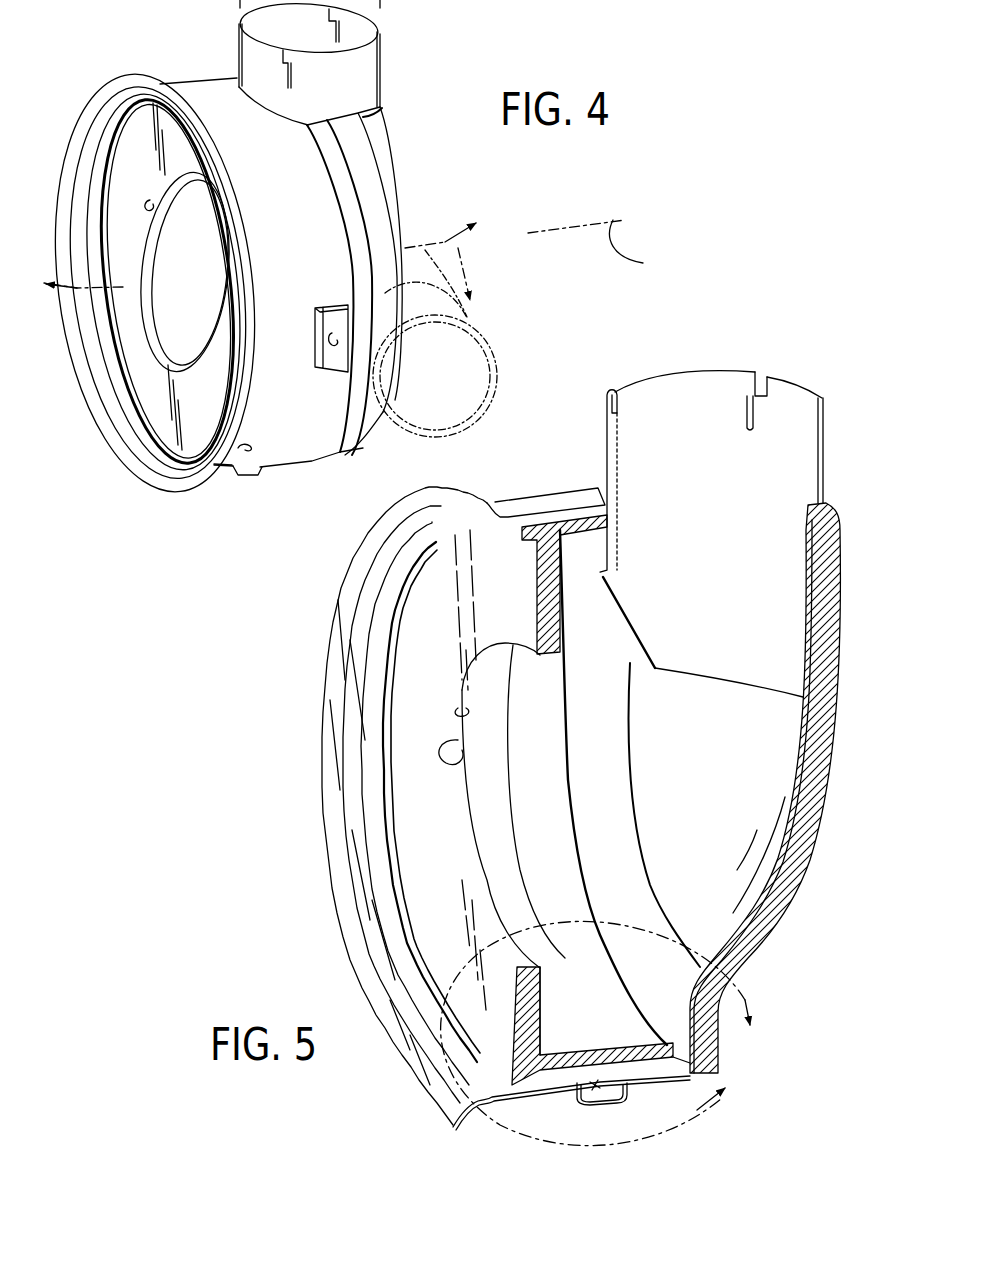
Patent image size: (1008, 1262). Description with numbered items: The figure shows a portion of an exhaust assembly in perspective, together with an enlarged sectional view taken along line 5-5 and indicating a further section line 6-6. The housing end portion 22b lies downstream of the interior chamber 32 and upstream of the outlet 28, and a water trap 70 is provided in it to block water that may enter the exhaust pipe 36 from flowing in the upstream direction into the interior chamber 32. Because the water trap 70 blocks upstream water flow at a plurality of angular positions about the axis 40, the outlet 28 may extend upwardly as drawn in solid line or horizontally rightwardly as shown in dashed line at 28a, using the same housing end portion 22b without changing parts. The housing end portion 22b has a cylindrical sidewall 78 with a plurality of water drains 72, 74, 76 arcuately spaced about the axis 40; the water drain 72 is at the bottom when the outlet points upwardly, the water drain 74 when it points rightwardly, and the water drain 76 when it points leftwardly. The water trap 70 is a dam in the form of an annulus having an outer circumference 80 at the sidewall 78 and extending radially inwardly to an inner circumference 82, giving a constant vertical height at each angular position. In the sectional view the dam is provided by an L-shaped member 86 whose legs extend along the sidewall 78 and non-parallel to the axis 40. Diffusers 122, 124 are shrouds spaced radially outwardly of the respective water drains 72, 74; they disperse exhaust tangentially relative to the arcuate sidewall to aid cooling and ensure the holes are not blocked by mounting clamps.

In FIG. 4, the section line 5- 5 is at (332, 271).
In FIG. 5, the section line 6- 6 is at (608, 1033).
In FIG. 4, the housing end portion 22b is at (207, 82).
In FIG. 5, the housing end portion 22b is at (568, 500).
In FIG. 4, the outlet 28 is at (362, 82).
In FIG. 5, the outlet 28 is at (823, 430).
In FIG. 4, the outlet in alternate orientation 28a is at (476, 322).
In FIG. 4, the interior chamber 32 is at (132, 413).
In FIG. 4, the exhaust pipe 36 is at (422, 0).
In FIG. 4, the axis 40 is at (643, 249).
In FIG. 4, the water trap 70 is at (156, 290).
In FIG. 5, the water trap 70 is at (470, 832).
In FIG. 4, the water drain 72 is at (244, 447).
In FIG. 5, the water drain 72 is at (597, 1084).
In FIG. 4, the water drain 74 is at (332, 340).
In FIG. 4, the water drain 76 is at (153, 203).
In FIG. 5, the water drain 76 is at (466, 708).
In FIG. 4, the cylindrical sidewall 78 is at (223, 472).
In FIG. 5, the cylindrical sidewall 78 is at (520, 1093).
In FIG. 5, the outer circumference 80 is at (398, 760).
In FIG. 5, the inner circumference 82 is at (462, 746).
In FIG. 5, the L-shaped member 86 is at (540, 1058).
In FIG. 4, the diffuser 122 is at (262, 470).
In FIG. 5, the diffuser 122 is at (610, 1097).
In FIG. 4, the diffuser 124 is at (335, 306).